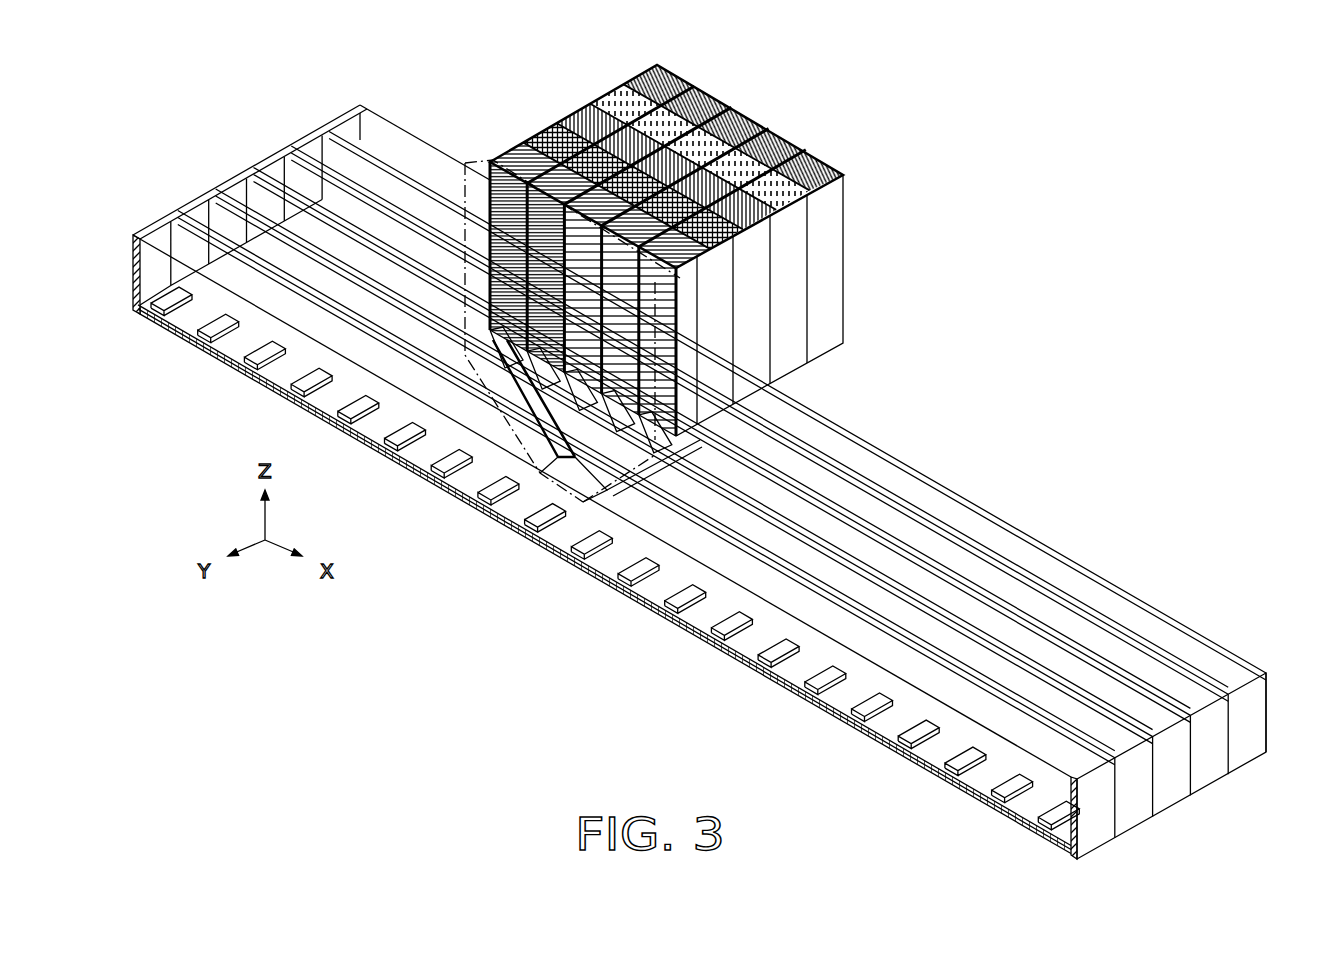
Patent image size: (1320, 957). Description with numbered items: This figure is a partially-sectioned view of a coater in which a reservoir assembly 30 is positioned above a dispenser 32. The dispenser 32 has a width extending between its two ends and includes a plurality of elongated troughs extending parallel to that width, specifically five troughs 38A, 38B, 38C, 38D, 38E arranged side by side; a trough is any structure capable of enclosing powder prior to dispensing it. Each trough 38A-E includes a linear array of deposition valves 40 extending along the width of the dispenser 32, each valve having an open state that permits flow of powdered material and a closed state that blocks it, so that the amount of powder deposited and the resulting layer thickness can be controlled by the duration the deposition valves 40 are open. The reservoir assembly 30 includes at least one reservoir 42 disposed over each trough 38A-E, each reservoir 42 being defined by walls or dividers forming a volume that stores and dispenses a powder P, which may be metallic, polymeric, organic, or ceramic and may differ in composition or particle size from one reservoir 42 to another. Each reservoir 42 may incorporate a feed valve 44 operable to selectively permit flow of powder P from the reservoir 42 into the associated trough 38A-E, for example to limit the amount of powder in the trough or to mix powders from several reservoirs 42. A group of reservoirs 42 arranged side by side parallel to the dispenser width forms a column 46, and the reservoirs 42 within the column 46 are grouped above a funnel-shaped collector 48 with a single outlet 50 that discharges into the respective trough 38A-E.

The reservoir assembly 30 is at (851, 350).
The dispenser 32 is at (1190, 805).
The trough 38A is at (1112, 826).
The trough 38B is at (1150, 805).
The trough 38C is at (1188, 784).
The trough 38D is at (1226, 763).
The trough 38E is at (1263, 742).
The deposition valve 40 is at (834, 680).
The reservoir 42 is at (790, 140).
The feed valve 44 is at (622, 418).
The column 46 is at (490, 148).
The collector 48 is at (650, 468).
The outlet 50 is at (505, 513).
The powder P is at (692, 100).